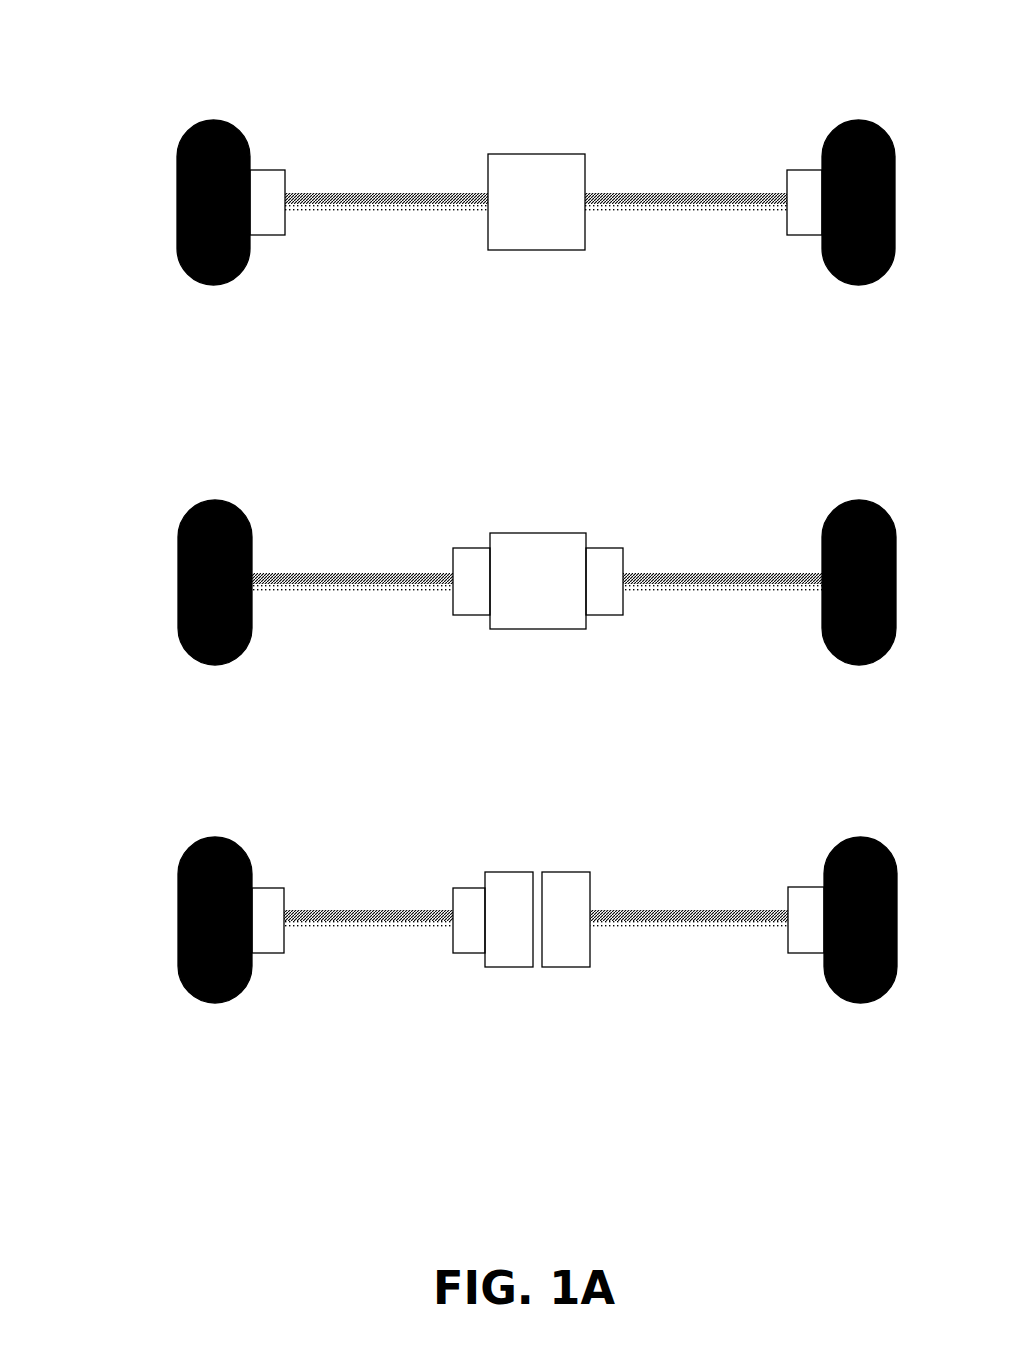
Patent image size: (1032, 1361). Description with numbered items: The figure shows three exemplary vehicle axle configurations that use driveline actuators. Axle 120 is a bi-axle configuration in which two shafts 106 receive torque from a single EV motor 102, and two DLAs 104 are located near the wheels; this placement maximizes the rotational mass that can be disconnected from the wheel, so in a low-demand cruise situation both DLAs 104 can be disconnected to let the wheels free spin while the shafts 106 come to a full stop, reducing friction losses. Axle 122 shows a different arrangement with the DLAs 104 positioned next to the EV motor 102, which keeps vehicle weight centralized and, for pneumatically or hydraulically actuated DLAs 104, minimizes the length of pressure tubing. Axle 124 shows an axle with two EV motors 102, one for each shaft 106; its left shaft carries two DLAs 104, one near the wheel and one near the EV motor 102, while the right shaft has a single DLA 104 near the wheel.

The EV motor 102 is at (540, 238).
The driveline actuator (DLA) 104 is at (812, 915).
The shaft 106 is at (706, 913).
The axle 120 is at (148, 172).
The axle 122 is at (151, 543).
The axle 124 is at (151, 891).